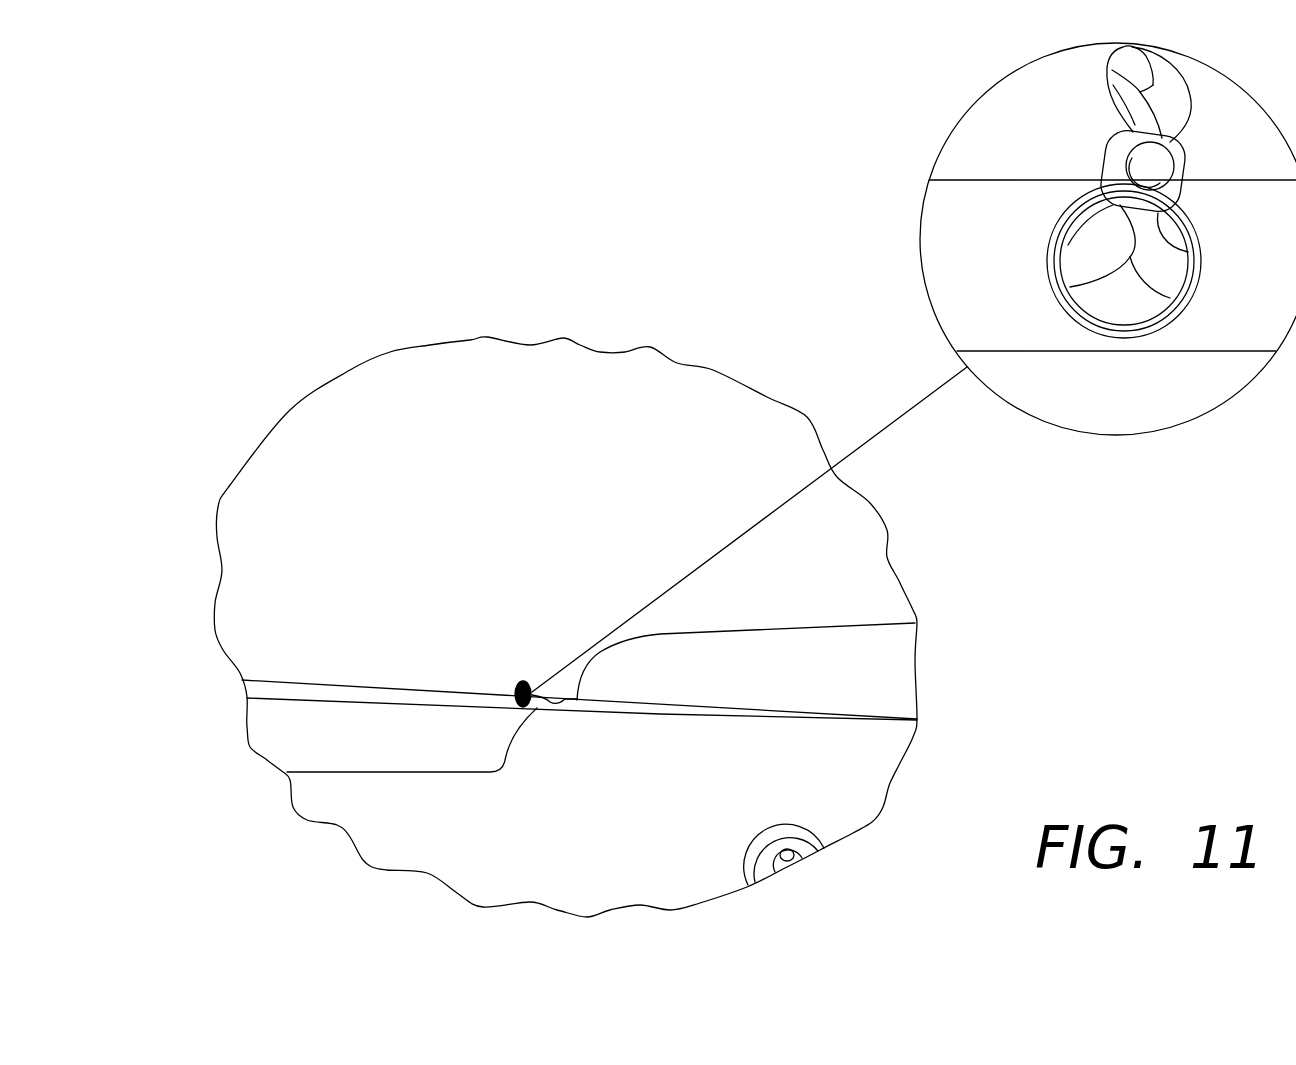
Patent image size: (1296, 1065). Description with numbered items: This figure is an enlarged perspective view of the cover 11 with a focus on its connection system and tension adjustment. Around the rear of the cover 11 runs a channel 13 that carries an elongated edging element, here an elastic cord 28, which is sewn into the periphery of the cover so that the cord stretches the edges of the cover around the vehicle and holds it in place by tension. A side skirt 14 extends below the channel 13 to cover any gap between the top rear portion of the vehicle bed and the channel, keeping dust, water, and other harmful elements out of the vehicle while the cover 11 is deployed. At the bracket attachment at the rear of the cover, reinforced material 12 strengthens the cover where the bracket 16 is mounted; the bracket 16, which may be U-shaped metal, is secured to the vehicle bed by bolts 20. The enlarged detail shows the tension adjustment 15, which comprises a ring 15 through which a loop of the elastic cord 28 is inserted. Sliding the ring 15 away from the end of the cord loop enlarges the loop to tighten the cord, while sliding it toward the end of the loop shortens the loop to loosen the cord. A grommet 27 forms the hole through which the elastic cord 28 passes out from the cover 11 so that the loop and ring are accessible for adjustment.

The cover 11 is at (392, 378).
The reinforced material 12 is at (920, 655).
The channel 13 is at (263, 690).
The side skirt 14 is at (448, 762).
The tension adjustment 15 is at (1148, 155).
The bracket 16 is at (918, 722).
The bolts 20 is at (548, 710).
The grommet 27 is at (1070, 238).
The elastic cord 28 is at (1183, 263).